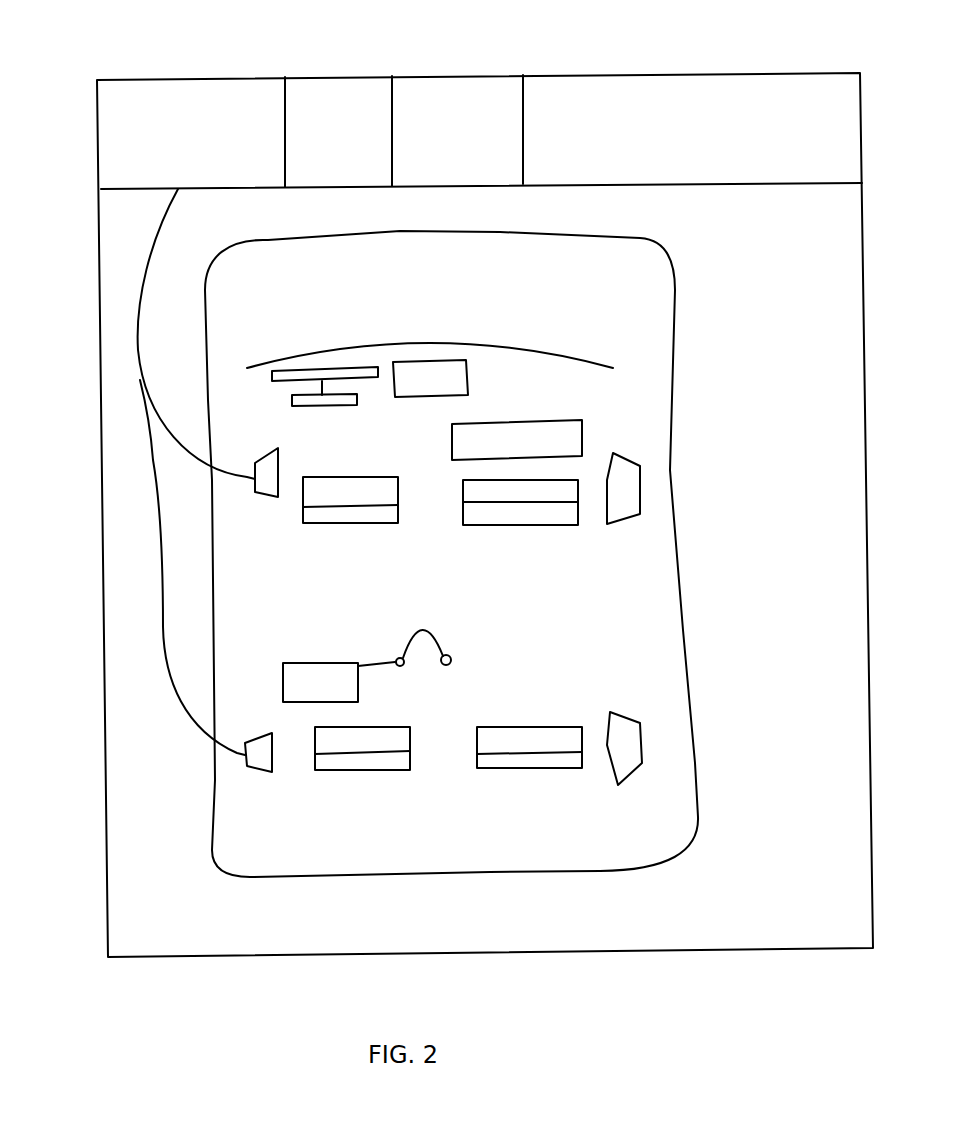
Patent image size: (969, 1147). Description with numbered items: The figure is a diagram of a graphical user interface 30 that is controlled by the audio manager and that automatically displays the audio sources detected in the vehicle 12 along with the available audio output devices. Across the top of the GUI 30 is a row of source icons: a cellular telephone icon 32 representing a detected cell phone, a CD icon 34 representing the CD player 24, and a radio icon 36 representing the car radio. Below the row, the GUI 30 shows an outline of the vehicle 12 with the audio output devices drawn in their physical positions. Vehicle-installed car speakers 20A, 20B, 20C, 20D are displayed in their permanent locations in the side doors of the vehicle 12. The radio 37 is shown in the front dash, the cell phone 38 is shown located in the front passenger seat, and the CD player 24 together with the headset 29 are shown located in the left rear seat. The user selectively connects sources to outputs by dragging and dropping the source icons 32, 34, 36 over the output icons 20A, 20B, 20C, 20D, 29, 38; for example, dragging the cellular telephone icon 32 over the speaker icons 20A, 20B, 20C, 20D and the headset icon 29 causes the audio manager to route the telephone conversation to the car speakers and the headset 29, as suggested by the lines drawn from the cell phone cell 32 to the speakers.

The graphical user interface 30 is at (100, 238).
The cellular telephone icon 32 is at (180, 80).
The CD player icon 34 is at (317, 80).
The audio source icon 36 is at (430, 72).
The vehicle 12 is at (668, 427).
The radio icon 37 is at (438, 362).
The cell phone 38 is at (468, 423).
The CD player 24 is at (328, 662).
The headset 29 is at (432, 624).
The car speaker 20A is at (255, 492).
The car speaker 20B is at (255, 732).
The car speaker 20C is at (620, 523).
The car speaker 20D is at (623, 712).